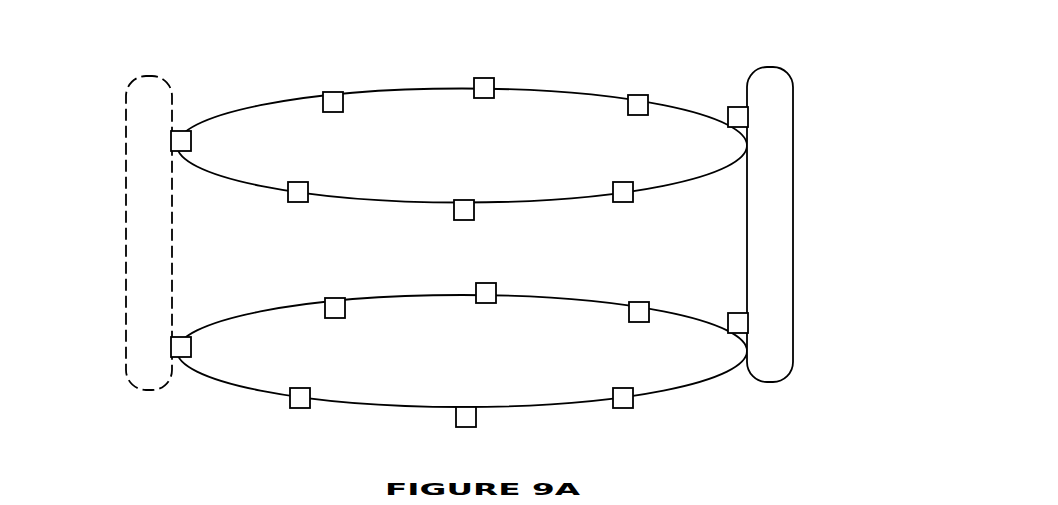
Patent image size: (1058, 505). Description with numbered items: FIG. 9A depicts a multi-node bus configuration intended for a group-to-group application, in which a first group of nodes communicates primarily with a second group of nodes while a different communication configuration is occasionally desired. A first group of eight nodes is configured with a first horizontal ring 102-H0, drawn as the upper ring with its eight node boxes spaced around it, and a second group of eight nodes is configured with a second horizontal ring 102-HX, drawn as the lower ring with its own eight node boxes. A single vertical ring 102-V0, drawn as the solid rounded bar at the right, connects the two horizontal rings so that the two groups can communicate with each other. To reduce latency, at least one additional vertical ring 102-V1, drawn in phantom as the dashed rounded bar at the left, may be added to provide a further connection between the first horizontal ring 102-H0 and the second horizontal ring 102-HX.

The first horizontal ring 102-H0 is at (253, 108).
The second horizontal ring 102-HX is at (253, 320).
The additional vertical ring 102-V1 is at (127, 171).
The vertical ring 102-V0 is at (775, 75).